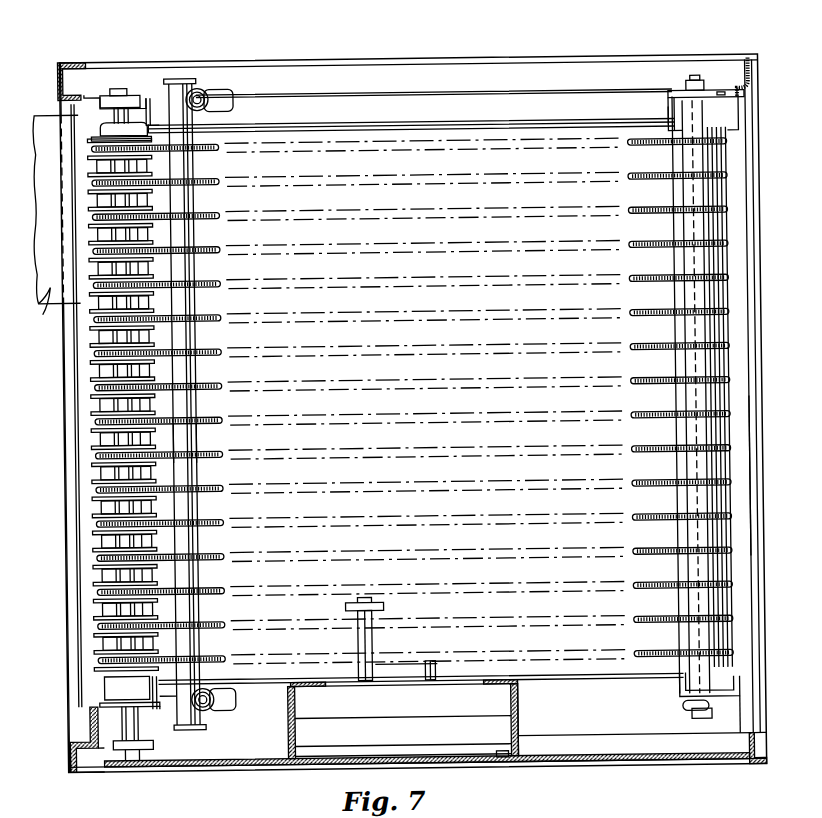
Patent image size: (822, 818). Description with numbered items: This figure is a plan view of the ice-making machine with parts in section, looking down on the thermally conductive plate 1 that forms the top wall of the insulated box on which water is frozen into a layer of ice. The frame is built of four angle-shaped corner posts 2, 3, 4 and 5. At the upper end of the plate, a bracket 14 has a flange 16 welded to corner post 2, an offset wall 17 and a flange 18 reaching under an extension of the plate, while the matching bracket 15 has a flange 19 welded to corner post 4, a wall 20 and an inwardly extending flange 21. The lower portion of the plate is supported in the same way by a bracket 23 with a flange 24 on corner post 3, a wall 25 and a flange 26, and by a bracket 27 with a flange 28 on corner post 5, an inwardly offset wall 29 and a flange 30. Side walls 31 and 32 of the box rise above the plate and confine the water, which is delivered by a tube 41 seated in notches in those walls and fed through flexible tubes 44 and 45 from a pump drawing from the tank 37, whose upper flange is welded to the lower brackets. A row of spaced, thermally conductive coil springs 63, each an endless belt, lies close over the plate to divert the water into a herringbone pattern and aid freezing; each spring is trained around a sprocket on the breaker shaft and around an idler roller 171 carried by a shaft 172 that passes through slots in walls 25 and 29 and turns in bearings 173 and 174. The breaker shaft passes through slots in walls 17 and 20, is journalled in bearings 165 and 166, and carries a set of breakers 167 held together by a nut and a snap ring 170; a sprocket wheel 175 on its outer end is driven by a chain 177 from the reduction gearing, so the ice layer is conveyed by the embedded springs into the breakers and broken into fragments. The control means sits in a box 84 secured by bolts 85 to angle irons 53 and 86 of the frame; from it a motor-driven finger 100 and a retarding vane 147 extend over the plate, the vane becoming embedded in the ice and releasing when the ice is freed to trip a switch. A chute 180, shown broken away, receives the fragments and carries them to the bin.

The plate 1 is at (382, 342).
The corner post 2 is at (62, 78).
The corner post 3 is at (760, 63).
The corner post 4 is at (66, 752).
The corner post 5 is at (762, 764).
The bracket 14 is at (86, 66).
The bracket 15 is at (90, 747).
The flange 16 is at (70, 82).
The wall 17 is at (140, 104).
The flange 18 is at (160, 98).
The flange 19 is at (76, 770).
The wall 20 is at (157, 706).
The flange 21 is at (172, 695).
The bracket 23 is at (735, 76).
The flange 24 is at (744, 86).
The wall 25 is at (676, 95).
The flange 26 is at (672, 116).
The bracket 27 is at (729, 726).
The flange 28 is at (751, 768).
The wall 29 is at (690, 710).
The flange 30 is at (676, 685).
The side wall 31 is at (455, 122).
The side wall 32 is at (572, 681).
The tank 37 is at (740, 508).
The tube 41 is at (197, 438).
The flexible tube 44 is at (222, 705).
The flexible tube 45 is at (224, 92).
The angle iron 53 is at (520, 700).
The coil springs 63 is at (226, 275).
The box 84 is at (478, 746).
The bolts 85 is at (505, 764).
The angle iron 86 is at (292, 698).
The finger 100 is at (342, 605).
The retarding element 147 is at (398, 668).
The bearing 165 is at (90, 720).
The bearing 166 is at (120, 92).
The breakers 167 is at (668, 815).
The snap ring 170 is at (102, 684).
The idler roller 171 is at (730, 338).
The shaft 172 is at (712, 113).
The bearing 173 is at (697, 80).
The bearing 174 is at (698, 722).
The sprocket wheel 175 is at (149, 750).
The chain 177 is at (282, 770).
The chute 180 is at (50, 292).